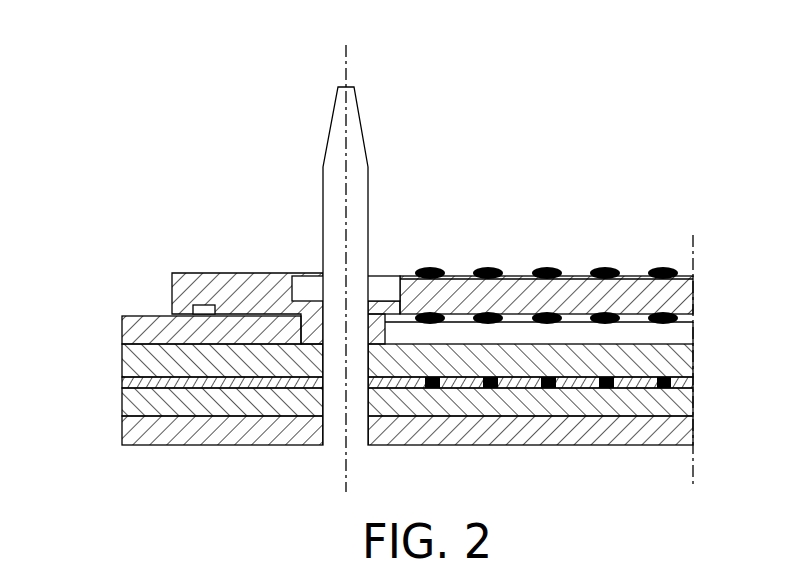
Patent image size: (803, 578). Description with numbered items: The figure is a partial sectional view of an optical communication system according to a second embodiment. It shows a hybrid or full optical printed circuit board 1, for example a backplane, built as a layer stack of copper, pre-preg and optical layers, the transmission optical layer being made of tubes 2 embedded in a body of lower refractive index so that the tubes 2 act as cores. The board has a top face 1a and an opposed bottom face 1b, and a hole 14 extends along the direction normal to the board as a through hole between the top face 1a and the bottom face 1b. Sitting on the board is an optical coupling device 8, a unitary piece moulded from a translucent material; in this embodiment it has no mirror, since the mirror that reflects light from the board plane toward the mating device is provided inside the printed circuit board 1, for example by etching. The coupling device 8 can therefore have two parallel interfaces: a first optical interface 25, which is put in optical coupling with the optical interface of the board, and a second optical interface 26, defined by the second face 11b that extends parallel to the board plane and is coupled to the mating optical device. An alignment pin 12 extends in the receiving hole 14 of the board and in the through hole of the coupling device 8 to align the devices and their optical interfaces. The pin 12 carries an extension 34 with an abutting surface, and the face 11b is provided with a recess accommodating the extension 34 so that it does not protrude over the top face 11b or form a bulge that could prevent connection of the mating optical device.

The printed circuit board 1 is at (360, 384).
The top surface 1a is at (136, 316).
The bottom face 1b is at (181, 446).
The tubes 2 is at (663, 389).
The optical coupling device 8 is at (266, 263).
The second face 11b is at (230, 272).
The alignment pin 12 is at (302, 178).
The hole 14 is at (320, 403).
The first optical interface 25 is at (543, 323).
The second optical interface 26 is at (430, 268).
The extension 34 is at (308, 289).